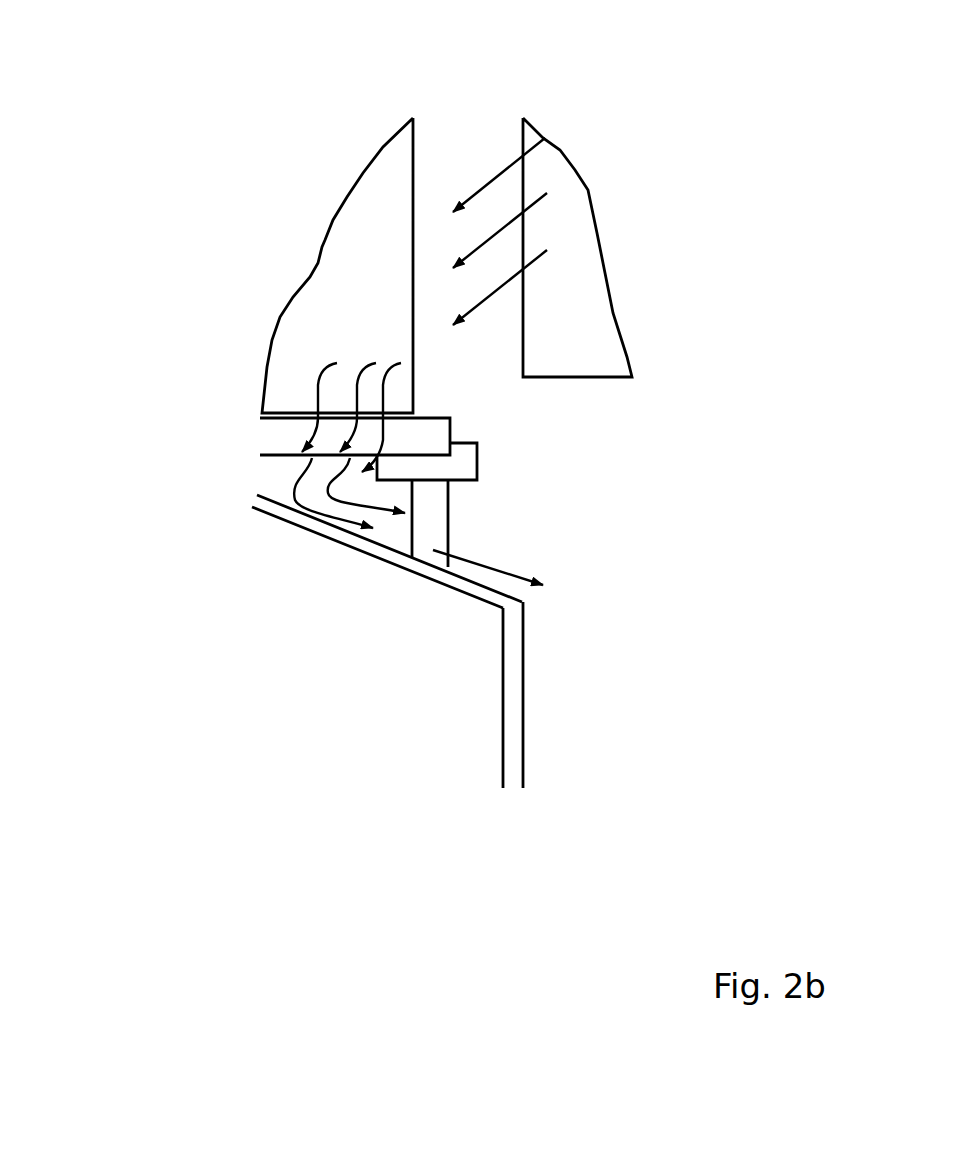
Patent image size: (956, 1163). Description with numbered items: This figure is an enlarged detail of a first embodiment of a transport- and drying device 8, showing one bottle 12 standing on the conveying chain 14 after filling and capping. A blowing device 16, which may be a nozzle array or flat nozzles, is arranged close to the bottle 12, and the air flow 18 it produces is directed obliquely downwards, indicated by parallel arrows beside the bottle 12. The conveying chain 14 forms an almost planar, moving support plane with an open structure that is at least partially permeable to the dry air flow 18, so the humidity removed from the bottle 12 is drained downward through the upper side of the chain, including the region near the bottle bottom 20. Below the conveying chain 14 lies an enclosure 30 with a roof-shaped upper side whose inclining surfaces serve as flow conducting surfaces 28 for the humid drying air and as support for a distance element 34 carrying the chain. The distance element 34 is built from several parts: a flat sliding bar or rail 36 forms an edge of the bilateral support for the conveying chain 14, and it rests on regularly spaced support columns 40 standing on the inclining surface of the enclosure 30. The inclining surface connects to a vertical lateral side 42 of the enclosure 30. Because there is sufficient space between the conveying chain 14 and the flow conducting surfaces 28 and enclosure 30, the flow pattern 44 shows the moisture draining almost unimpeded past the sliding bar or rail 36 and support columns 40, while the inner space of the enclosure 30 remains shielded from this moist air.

The transport- and drying device 8 is at (260, 185).
The bottle 12 is at (358, 282).
The conveying chain 14 is at (443, 433).
The blowing device 16 is at (587, 220).
The air flow 18 is at (502, 160).
The bottle bottom 20 is at (272, 387).
The flow conducting surface 28 is at (492, 589).
The enclosure 30 is at (538, 728).
The distance element 34 is at (515, 528).
The sliding bar or rail 36 is at (467, 458).
The support column 40 is at (430, 527).
The vertical lateral side 42 is at (515, 658).
The flow pattern 44 is at (285, 482).